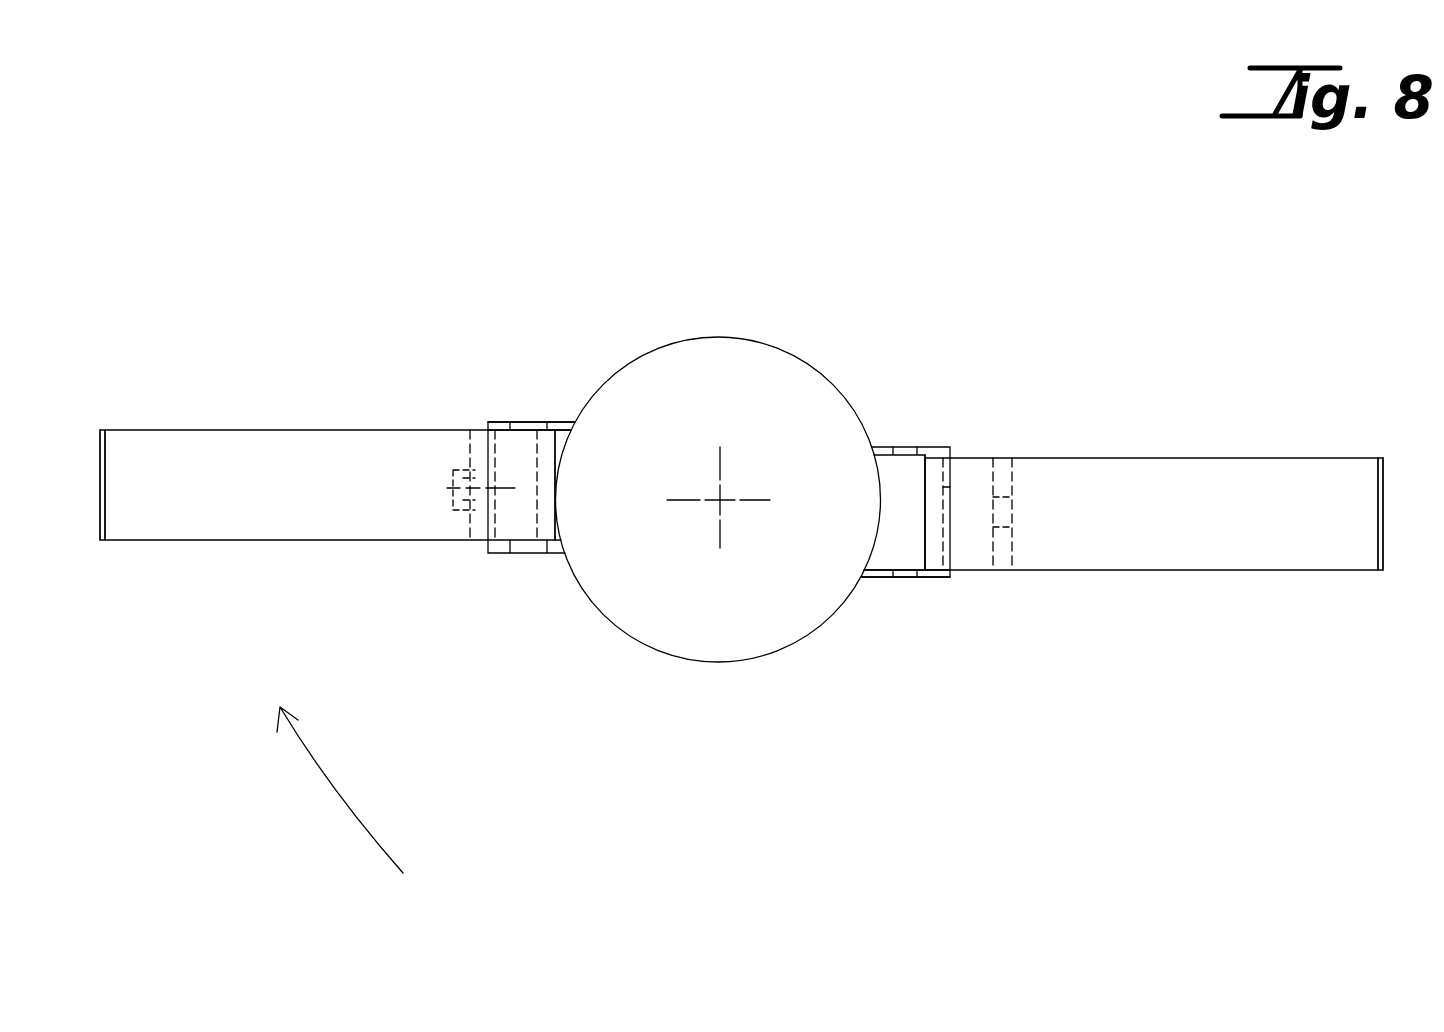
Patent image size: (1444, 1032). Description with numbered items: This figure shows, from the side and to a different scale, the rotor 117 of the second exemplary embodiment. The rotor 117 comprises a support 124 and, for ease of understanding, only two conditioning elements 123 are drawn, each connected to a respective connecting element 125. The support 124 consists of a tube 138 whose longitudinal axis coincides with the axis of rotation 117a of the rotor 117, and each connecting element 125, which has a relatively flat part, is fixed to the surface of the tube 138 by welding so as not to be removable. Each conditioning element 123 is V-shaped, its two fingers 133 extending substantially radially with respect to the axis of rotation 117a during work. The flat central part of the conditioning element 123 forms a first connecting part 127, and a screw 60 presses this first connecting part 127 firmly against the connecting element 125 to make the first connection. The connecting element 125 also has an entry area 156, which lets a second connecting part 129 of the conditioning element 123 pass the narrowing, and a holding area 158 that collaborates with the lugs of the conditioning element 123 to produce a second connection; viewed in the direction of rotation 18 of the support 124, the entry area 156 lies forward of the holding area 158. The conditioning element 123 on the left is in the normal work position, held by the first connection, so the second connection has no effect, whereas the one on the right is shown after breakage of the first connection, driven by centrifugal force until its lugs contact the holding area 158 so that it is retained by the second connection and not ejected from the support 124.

The direction of rotation 18 is at (338, 805).
The screw 60 is at (453, 512).
The rotor 117 is at (727, 777).
The axis of rotation 117a is at (718, 500).
The conditioning element 123 is at (278, 378).
The support 124 is at (901, 334).
The connecting element 125 is at (921, 434).
The first connecting part 127 is at (1013, 548).
The second connecting part 129 is at (529, 450).
The fingers 133 is at (141, 543).
The tube 138 is at (735, 337).
The entry area 156 is at (535, 422).
The holding area 158 is at (495, 527).